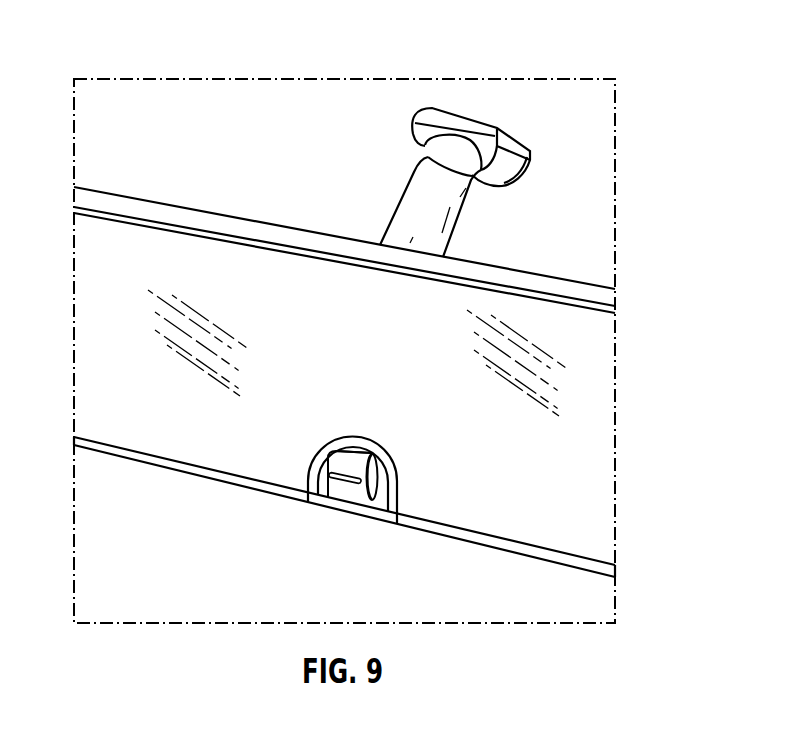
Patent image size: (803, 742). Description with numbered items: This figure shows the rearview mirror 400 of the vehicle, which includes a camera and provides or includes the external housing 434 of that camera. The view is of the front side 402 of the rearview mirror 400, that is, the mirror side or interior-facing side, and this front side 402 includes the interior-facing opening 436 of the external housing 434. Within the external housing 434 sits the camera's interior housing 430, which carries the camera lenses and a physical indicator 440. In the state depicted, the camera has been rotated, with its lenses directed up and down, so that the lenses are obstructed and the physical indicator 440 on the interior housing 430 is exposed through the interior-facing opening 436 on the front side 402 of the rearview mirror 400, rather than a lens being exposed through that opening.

The rearview mirror 400 is at (618, 62).
The front side 402 is at (382, 344).
The interior housing 430 is at (350, 465).
The external housing 434 is at (380, 488).
The interior-facing opening 436 is at (413, 452).
The physical indicator 440 is at (340, 483).